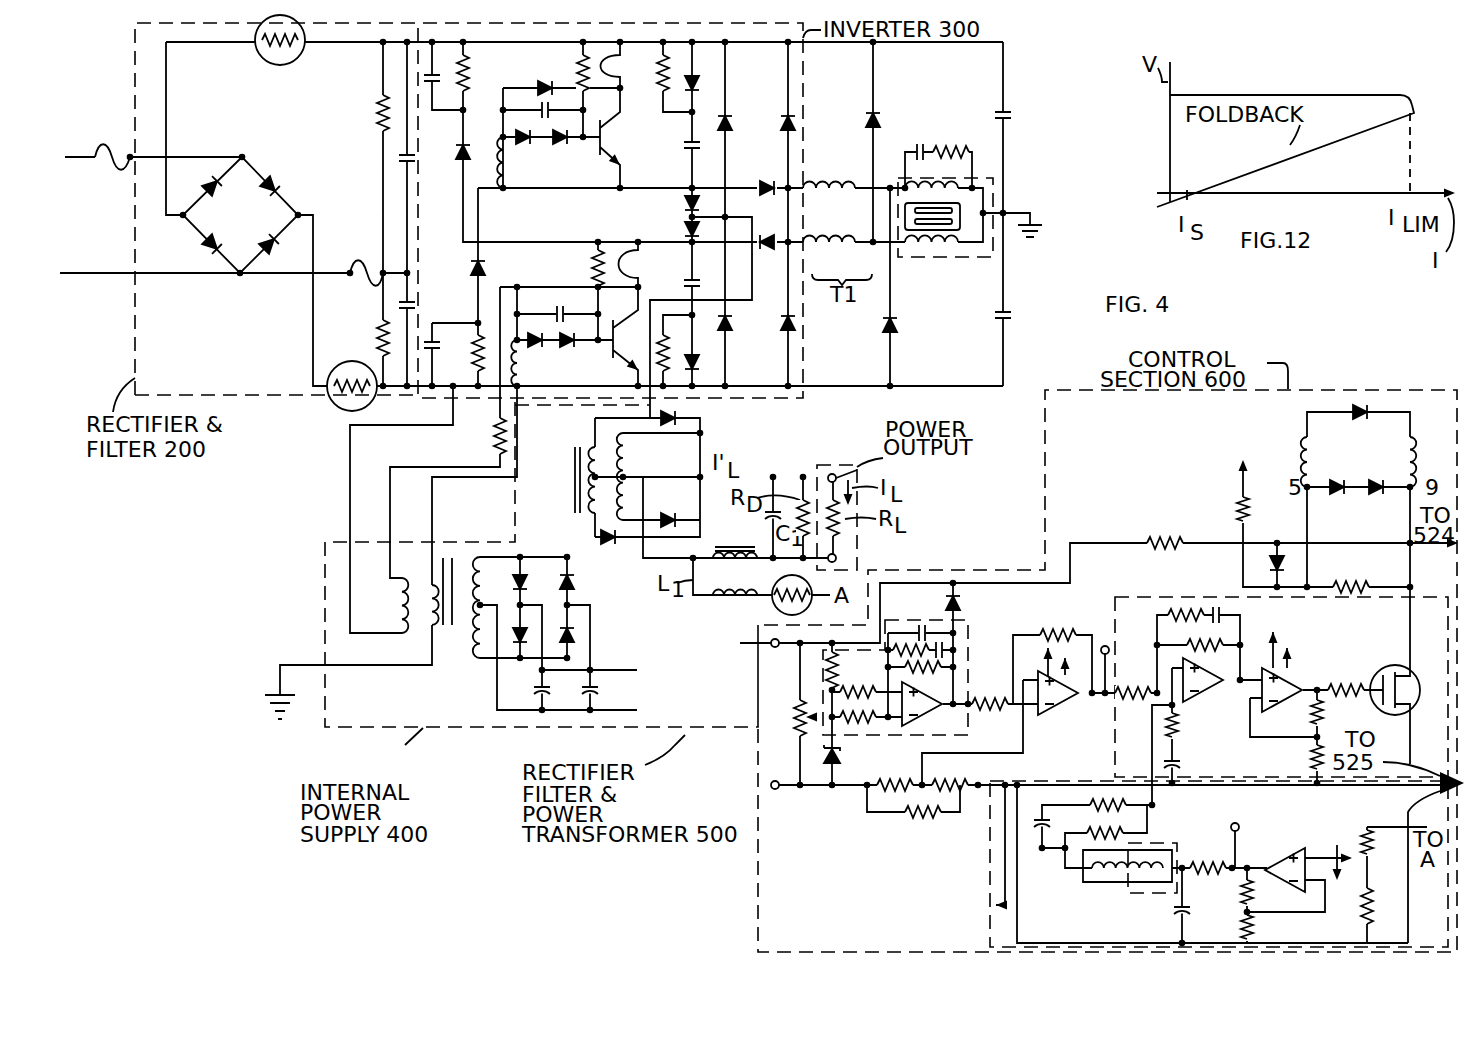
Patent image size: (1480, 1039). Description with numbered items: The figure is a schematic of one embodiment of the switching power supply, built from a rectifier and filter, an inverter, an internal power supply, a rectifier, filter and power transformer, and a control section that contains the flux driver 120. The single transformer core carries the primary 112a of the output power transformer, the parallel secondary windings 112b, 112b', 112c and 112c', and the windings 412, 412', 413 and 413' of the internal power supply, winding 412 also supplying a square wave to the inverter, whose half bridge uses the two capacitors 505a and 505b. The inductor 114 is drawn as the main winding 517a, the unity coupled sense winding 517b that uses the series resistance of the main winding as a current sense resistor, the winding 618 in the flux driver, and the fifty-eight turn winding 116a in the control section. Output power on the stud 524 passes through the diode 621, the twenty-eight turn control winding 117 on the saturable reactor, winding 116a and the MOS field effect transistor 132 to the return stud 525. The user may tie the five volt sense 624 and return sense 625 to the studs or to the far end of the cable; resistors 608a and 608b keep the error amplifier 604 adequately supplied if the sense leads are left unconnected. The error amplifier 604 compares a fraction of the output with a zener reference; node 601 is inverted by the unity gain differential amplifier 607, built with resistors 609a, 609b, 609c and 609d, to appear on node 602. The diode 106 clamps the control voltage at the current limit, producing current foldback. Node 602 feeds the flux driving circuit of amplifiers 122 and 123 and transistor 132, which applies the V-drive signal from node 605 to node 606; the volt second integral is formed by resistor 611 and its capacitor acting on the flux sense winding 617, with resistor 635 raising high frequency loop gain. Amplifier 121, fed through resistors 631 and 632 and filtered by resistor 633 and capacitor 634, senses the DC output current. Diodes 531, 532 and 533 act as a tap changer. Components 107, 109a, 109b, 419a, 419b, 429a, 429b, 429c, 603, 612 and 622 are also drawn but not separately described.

The diode 106 is at (922, 148).
The saturable core 107 is at (941, 245).
The primary winding 112a is at (838, 214).
The secondary winding 112b is at (668, 462).
The secondary winding 112b' is at (667, 443).
The secondary winding 112c is at (671, 494).
The secondary winding 112c' is at (553, 496).
The resistor 109a is at (432, 515).
The line 109b is at (428, 650).
The winding 412 is at (378, 614).
The winding 412' is at (397, 647).
The winding 413 is at (535, 560).
The winding 413' is at (459, 672).
The input lead 419a is at (390, 578).
The input lead 419b is at (350, 633).
The rectifier lead 429a is at (478, 553).
The rectifier lead 429b is at (500, 710).
The rectifier lead 429c is at (569, 558).
The output terminal 524 is at (802, 472).
The return stud 525 is at (790, 560).
The main winding 517a is at (701, 546).
The sense winding 517b is at (729, 598).
The capacitor 505a is at (1010, 107).
The capacitor 505b is at (1018, 316).
The error amplifier 604 is at (969, 625).
The inverting differential operational amplifier 607 is at (1039, 625).
The resistor 609a is at (884, 782).
The resistor 609b is at (961, 790).
The resistor 609c is at (988, 691).
The resistor 609d is at (1107, 654).
The node 601 is at (964, 708).
The node 602 is at (1068, 700).
The node 603 is at (980, 783).
The resistor 612 is at (1095, 798).
The resistor 611 is at (1181, 804).
The resistor 608a is at (1185, 532).
The resistor 608b is at (928, 812).
The flux sense winding 617 is at (1135, 882).
The winding 618 is at (1094, 871).
The diode 621 is at (1270, 560).
The resistor 622 is at (1377, 567).
The adjustable resistor 631 is at (1380, 815).
The resistor 632 is at (1361, 927).
The resistor 633 is at (1210, 856).
The capacitor 634 is at (1186, 911).
The resistor 635 is at (1180, 734).
The node 606 is at (1307, 591).
The node 605 is at (1409, 589).
The flux driver 120 is at (990, 913).
The operational amplifier 121 is at (1289, 852).
The differential operational amplifier 122 is at (1204, 698).
The differential operational amplifier 123 is at (1284, 673).
The MOS field effect transistor 132 is at (1380, 670).
The inductor 114 is at (1412, 443).
The winding 116a is at (1371, 467).
The control winding 117 is at (1303, 461).
The diode 531 is at (1333, 502).
The diode 532 is at (1379, 502).
The diode 533 is at (1352, 407).
The sense terminal 624 is at (770, 643).
The return sense terminal 625 is at (770, 785).